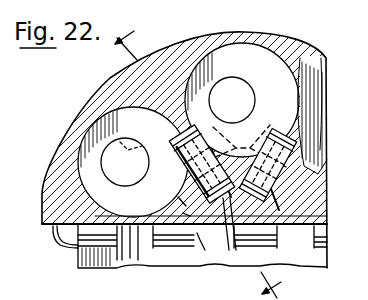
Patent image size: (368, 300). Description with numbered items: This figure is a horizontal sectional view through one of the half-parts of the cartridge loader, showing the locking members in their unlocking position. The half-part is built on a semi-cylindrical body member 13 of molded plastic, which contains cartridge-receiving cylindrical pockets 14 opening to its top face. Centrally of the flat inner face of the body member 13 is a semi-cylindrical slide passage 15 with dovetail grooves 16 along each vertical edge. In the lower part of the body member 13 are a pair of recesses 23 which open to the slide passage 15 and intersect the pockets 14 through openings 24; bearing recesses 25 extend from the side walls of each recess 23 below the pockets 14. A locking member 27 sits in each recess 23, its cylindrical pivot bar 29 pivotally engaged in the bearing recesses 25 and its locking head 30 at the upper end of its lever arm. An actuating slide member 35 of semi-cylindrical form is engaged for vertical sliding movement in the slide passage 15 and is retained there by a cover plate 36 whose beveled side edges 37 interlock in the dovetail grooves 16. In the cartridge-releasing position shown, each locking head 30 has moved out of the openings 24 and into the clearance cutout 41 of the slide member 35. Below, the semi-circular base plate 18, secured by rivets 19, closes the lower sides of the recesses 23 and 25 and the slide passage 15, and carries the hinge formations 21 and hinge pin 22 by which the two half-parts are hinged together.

The semi-cylindrical body member 13 is at (110, 80).
The cartridge-receiving cylindrical pockets 14 is at (70, 140).
The slide passage 15 is at (178, 197).
The dovetail grooves 16 is at (183, 213).
The base plate 18 is at (102, 262).
The rivets 19 is at (120, 142).
The hinge formations 21 is at (218, 232).
The hinge pin 22 is at (63, 240).
The recesses 23 is at (177, 133).
The openings 24 is at (180, 170).
The bearing recesses 25 is at (148, 171).
The locking member 27 is at (266, 126).
The pivot bar 29 is at (195, 131).
The locking head 30 is at (282, 224).
The actuating slide member 35 is at (250, 222).
The cover plate 36 is at (191, 227).
The beveled side edges 37 is at (186, 226).
The clearance cutout 41 is at (236, 234).